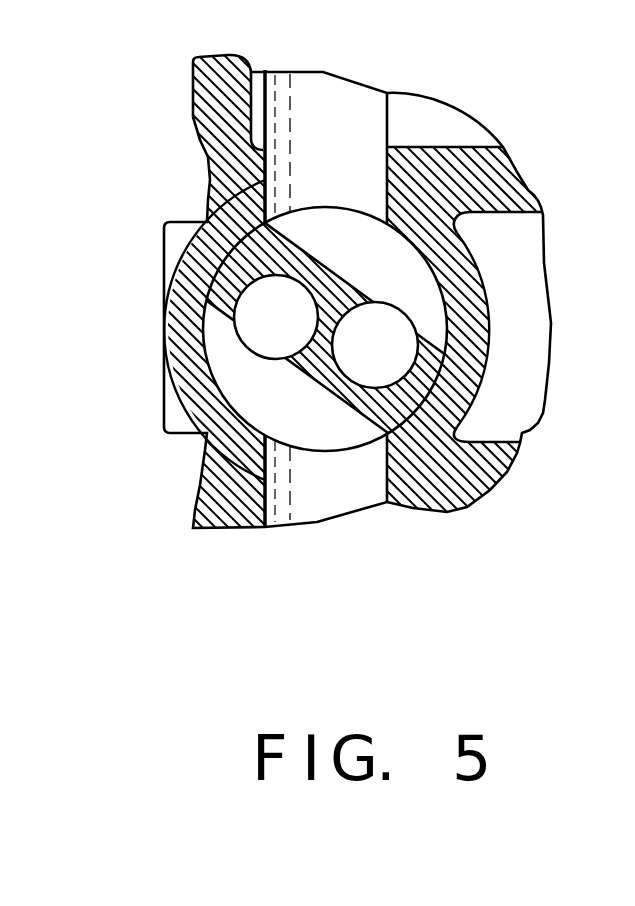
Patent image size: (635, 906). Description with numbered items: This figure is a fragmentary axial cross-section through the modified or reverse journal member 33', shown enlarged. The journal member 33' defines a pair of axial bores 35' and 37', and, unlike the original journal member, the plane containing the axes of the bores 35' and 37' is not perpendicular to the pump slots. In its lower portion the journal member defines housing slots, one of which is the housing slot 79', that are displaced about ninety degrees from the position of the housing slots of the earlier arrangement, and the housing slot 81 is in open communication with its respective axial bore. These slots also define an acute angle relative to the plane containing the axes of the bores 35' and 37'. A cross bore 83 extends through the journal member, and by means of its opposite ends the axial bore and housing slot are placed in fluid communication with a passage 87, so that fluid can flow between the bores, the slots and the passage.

The modified journal member 33' is at (287, 330).
The axial bore 35' is at (201, 317).
The axial bore 37' is at (483, 345).
The housing slot 79' is at (371, 453).
The housing slot 81 is at (393, 245).
The cross bore 83 is at (283, 110).
The passage 87 is at (435, 112).